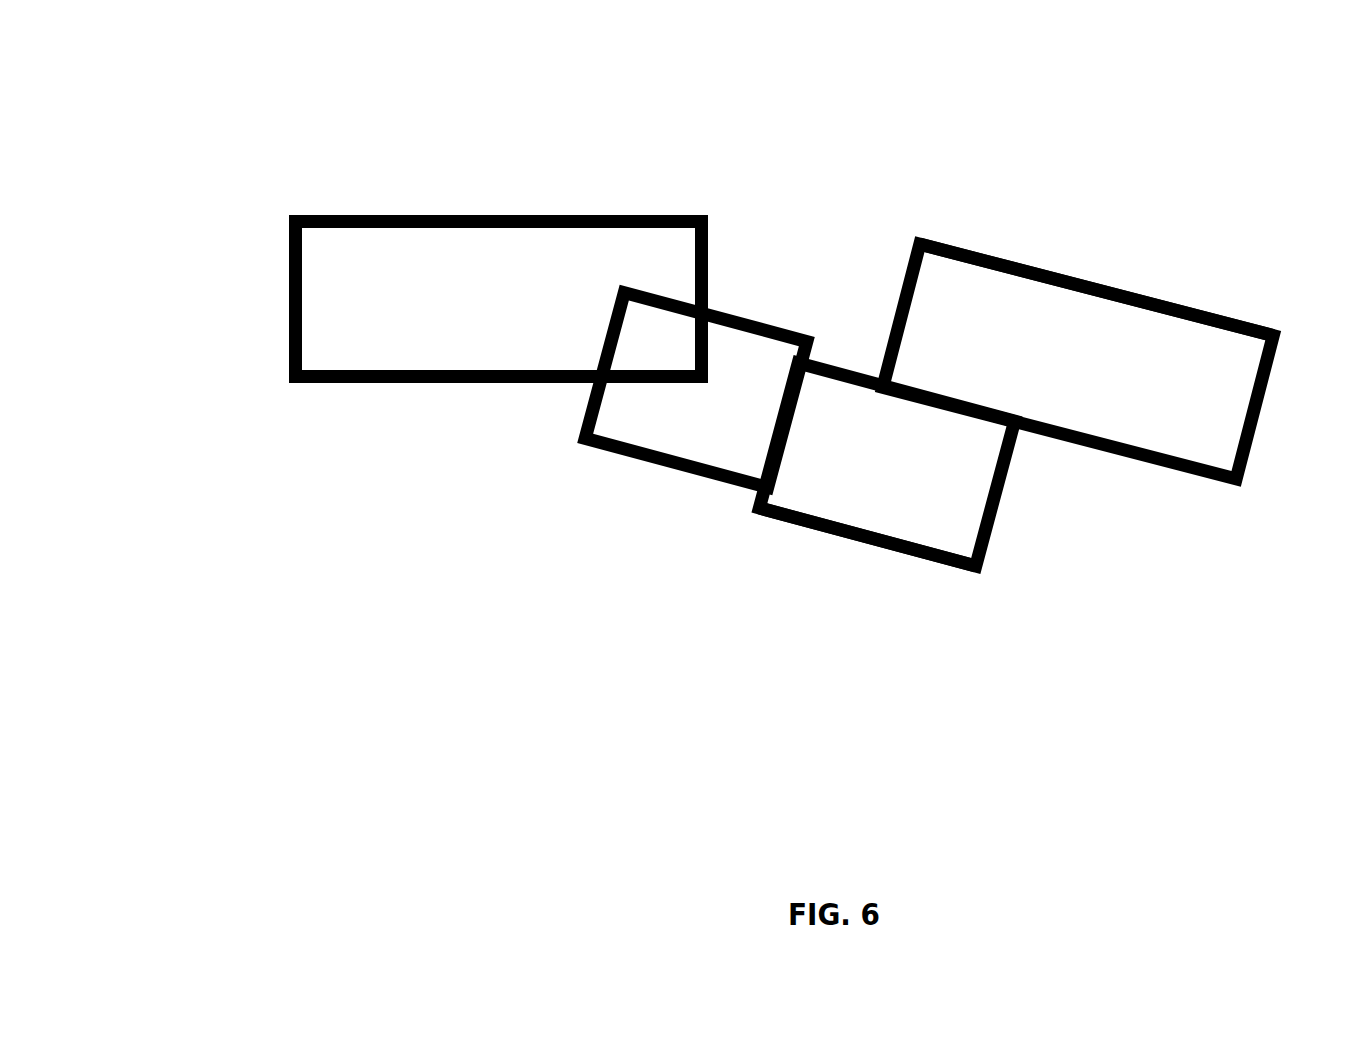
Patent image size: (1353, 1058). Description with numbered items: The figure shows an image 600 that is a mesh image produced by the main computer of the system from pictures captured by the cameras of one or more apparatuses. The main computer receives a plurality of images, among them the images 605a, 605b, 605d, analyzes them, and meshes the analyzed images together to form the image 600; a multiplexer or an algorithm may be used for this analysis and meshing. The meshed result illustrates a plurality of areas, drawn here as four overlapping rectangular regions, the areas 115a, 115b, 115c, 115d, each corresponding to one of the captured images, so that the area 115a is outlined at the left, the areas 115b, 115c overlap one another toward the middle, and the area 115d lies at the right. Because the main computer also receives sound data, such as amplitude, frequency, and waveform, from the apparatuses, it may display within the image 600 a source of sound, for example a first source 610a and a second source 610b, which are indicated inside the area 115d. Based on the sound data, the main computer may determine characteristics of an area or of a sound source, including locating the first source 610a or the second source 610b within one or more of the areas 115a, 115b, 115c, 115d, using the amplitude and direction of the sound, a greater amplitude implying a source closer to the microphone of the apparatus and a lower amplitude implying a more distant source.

The image 600 is at (284, 61).
The area 115a is at (310, 309).
The area 115b is at (749, 346).
The area 115c is at (882, 419).
The area 115d is at (939, 263).
The image 605a is at (400, 215).
The image 605b is at (833, 532).
The image 605d is at (1193, 302).
The first source 610a is at (998, 345).
The second source 610b is at (1028, 372).